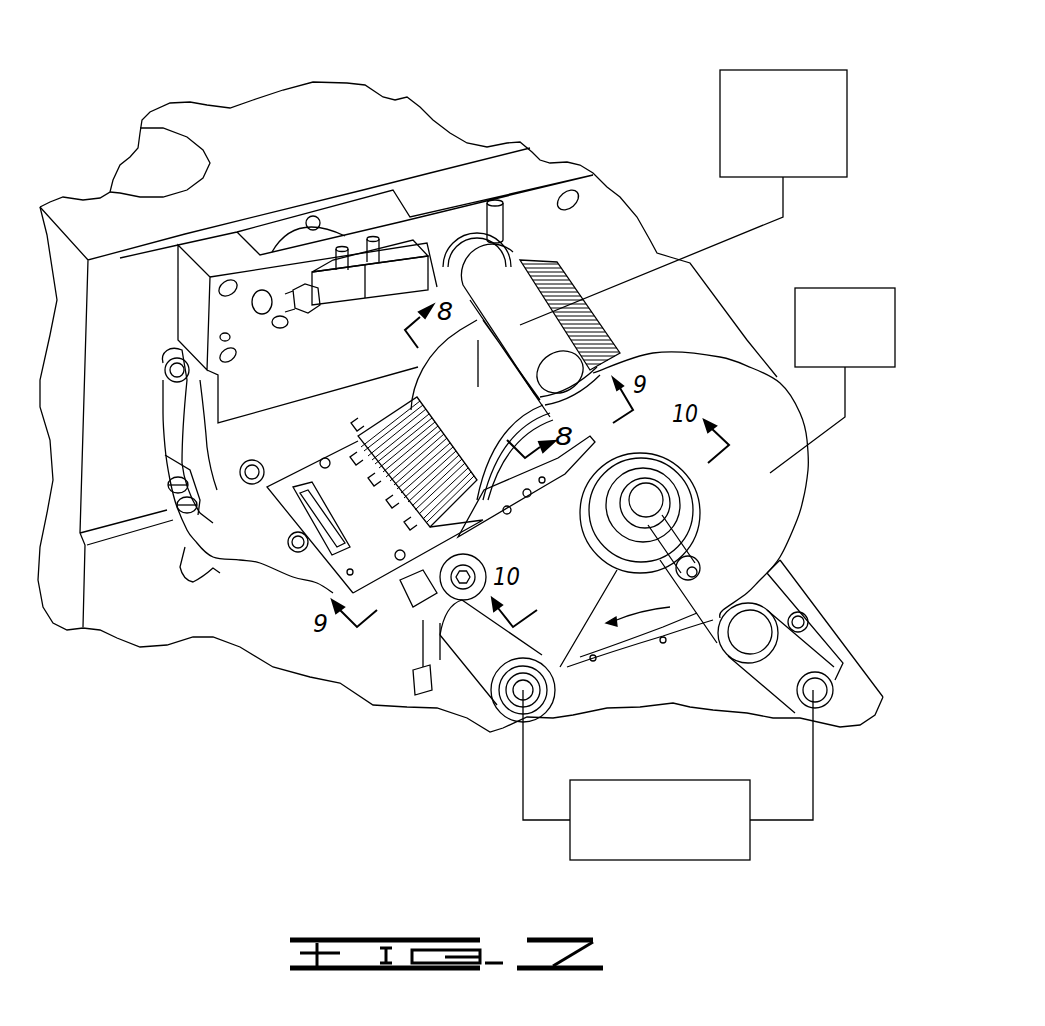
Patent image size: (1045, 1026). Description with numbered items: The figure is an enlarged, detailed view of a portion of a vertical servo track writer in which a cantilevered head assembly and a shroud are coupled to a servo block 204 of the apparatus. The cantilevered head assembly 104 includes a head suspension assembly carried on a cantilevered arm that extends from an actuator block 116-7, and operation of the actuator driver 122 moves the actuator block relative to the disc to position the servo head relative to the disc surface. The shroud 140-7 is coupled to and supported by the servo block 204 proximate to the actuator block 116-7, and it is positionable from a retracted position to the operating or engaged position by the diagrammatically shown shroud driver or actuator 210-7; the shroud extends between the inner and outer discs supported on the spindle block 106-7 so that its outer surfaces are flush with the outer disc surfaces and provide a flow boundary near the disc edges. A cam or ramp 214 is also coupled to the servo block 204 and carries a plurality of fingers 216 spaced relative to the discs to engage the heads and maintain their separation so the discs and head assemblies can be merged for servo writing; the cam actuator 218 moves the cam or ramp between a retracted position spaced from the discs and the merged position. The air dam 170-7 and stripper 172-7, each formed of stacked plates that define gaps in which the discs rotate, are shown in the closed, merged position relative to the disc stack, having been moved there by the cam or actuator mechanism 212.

The servo block 204 is at (277, 142).
The cam actuator 218 is at (405, 253).
The cam or ramp 214 is at (500, 283).
The actuator or driver 210-7 is at (783, 70).
The fingers 216 is at (600, 297).
The spindle block 106-7 is at (848, 287).
The air dam 170-7 is at (783, 520).
The shroud 140-7 is at (417, 367).
The cantilevered head assembly 104 is at (553, 523).
The actuator driver 122 is at (263, 537).
The actuator block 116-7 is at (397, 627).
The stripper 172-7 is at (557, 638).
The cam or actuator mechanism 212 is at (690, 860).